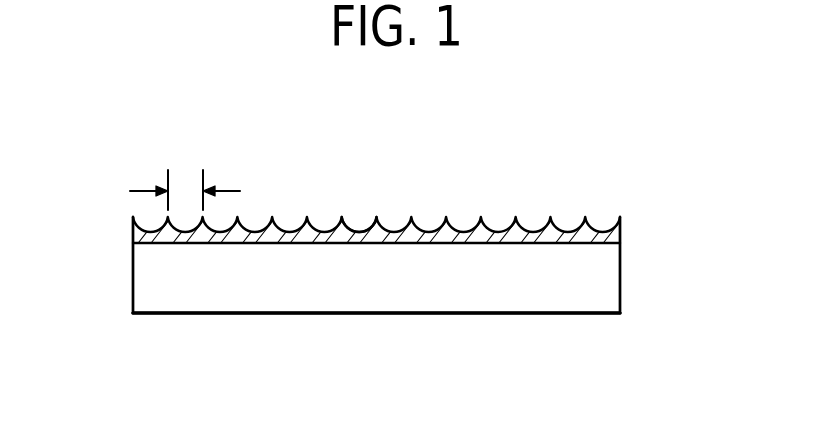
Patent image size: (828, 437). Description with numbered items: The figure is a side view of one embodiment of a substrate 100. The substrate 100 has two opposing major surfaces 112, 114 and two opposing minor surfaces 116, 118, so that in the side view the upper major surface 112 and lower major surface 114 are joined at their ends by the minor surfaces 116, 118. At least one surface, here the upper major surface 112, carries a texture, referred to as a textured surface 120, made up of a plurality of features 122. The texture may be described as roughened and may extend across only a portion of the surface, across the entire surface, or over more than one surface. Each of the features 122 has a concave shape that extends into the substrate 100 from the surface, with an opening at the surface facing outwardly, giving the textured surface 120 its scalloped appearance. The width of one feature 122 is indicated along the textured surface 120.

The substrate 100 is at (386, 297).
The major surface 112 is at (573, 229).
The major surface 114 is at (565, 313).
The minor surface 116 is at (620, 263).
The minor surface 118 is at (133, 273).
The textured surface 120 is at (372, 228).
The features 122 is at (163, 189).